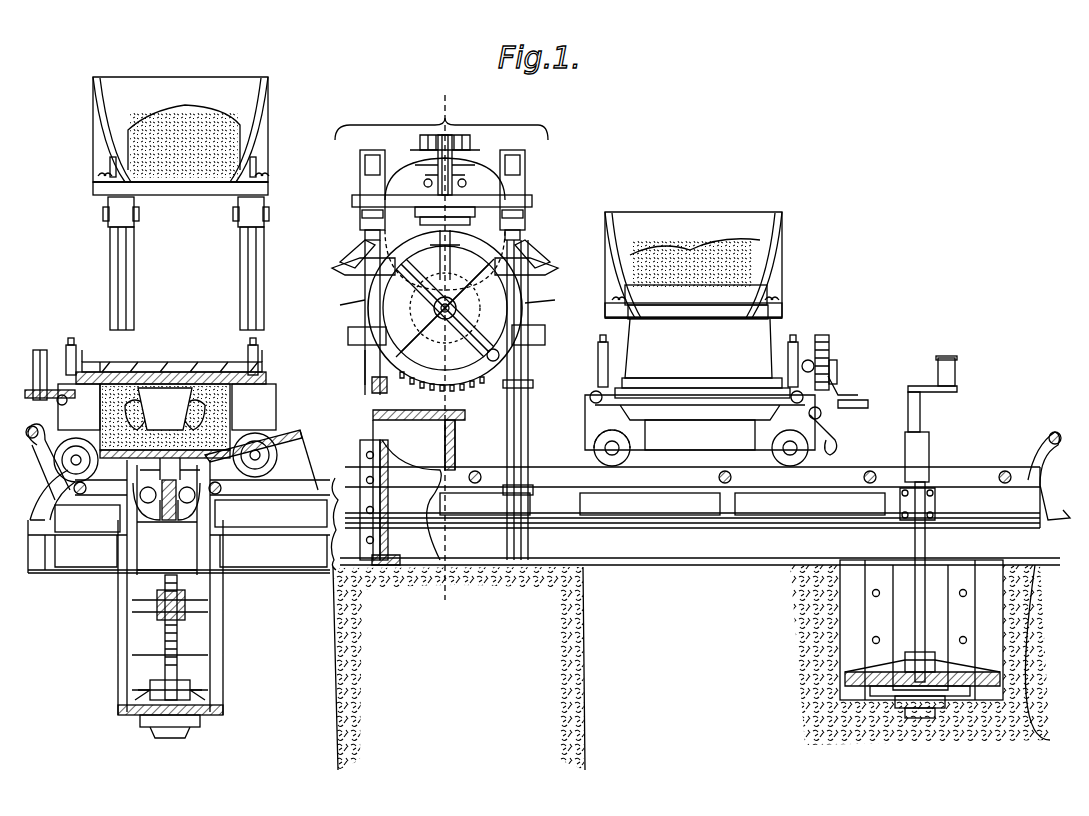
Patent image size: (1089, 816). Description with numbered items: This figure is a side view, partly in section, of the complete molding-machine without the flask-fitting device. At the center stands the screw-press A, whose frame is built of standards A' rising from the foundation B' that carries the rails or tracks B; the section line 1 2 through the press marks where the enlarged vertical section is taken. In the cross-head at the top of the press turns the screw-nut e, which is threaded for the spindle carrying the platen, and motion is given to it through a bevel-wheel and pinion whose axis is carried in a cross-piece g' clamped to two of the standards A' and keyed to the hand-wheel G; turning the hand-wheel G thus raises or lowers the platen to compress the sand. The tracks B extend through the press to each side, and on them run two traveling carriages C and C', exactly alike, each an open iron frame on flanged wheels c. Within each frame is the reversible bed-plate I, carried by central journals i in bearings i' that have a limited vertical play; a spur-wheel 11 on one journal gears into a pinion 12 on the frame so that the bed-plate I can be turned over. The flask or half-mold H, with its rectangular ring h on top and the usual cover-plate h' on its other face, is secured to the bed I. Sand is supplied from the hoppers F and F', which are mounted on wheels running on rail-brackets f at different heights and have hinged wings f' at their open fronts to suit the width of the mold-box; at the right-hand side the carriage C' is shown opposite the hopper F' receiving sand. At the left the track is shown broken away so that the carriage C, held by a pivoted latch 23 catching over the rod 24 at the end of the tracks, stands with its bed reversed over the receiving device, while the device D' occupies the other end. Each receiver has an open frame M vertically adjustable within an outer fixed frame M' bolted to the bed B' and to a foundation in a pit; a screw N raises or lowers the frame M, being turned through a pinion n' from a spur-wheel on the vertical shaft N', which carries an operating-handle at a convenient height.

The sand-supply box or hopper F is at (180, 129).
The hinged wings f' is at (437, 219).
The rail-brackets f is at (186, 263).
The spur-wheel 11 is at (430, 367).
The pinion 12 is at (825, 367).
The central journals i is at (43, 387).
The bearings i' is at (60, 388).
The traveling carriage C is at (155, 385).
The traveling carriage C' is at (700, 420).
The bed-plate I is at (446, 379).
The flask or half-mold H is at (429, 388).
The press-frame or rectangular ring h is at (698, 311).
The cover-plate h' is at (460, 404).
The wheels c is at (431, 456).
The pivoted latch 23 is at (435, 453).
The projection or rod 24 is at (28, 445).
The rails or tracks B is at (539, 514).
The foundation B' is at (547, 512).
The open frame M is at (168, 585).
The outer fixed frame M' is at (549, 629).
The screw N is at (174, 637).
The vertical shaft N' is at (931, 519).
The pinion n' is at (170, 687).
The press A is at (443, 346).
The standards A' is at (446, 355).
The screw-nut e is at (445, 178).
The hand-wheel G is at (458, 310).
The cross-piece g' is at (448, 325).
The sand-supply box or hopper F' is at (693, 254).
The receiving device D' is at (928, 483).
The section line 1 is at (432, 95).
The section line 2 is at (440, 620).